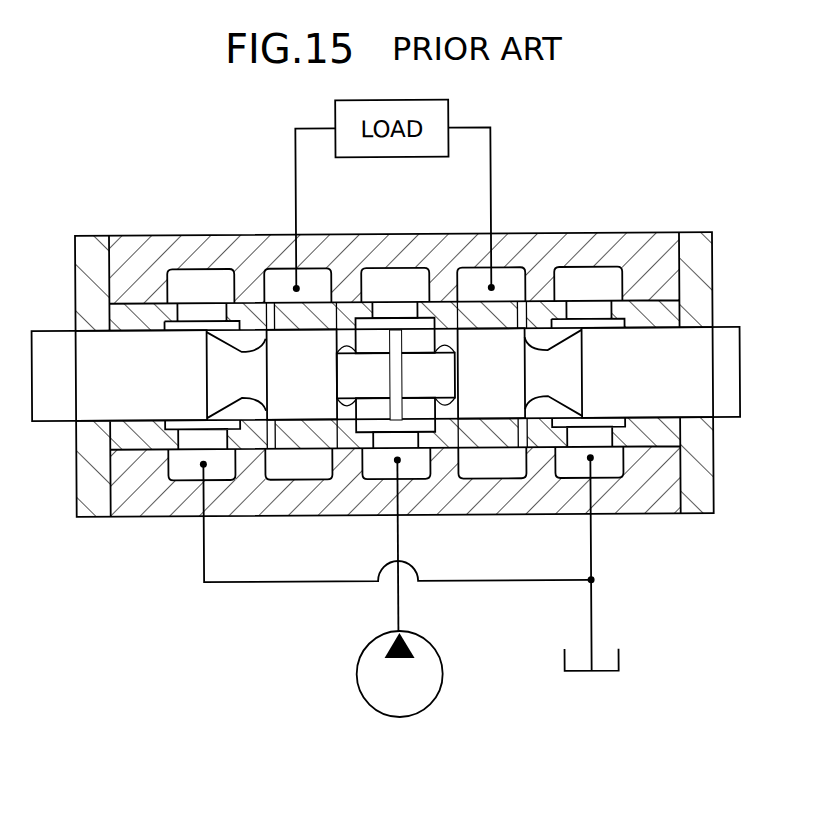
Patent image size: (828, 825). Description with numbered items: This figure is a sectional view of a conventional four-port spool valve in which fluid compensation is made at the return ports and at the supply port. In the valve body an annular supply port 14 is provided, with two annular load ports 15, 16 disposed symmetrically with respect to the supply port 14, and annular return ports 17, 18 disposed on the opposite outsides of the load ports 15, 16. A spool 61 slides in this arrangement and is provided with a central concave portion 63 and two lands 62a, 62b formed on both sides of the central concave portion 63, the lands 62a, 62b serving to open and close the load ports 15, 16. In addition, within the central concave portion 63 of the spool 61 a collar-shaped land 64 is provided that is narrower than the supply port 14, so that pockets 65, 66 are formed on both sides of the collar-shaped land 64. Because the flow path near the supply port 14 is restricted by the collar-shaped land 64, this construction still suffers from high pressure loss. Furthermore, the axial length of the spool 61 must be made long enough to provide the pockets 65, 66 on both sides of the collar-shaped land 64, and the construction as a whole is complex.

The supply port 14 is at (387, 438).
The load port 15 is at (330, 438).
The load port 16 is at (463, 437).
The return port 17 is at (207, 420).
The return port 18 is at (590, 420).
The spool 61 is at (47, 410).
The land 62a is at (267, 338).
The land 62b is at (523, 330).
The central concave portion 63 is at (397, 318).
The collar-shaped land 64 is at (397, 352).
The pocket 65 is at (337, 354).
The pocket 66 is at (455, 354).